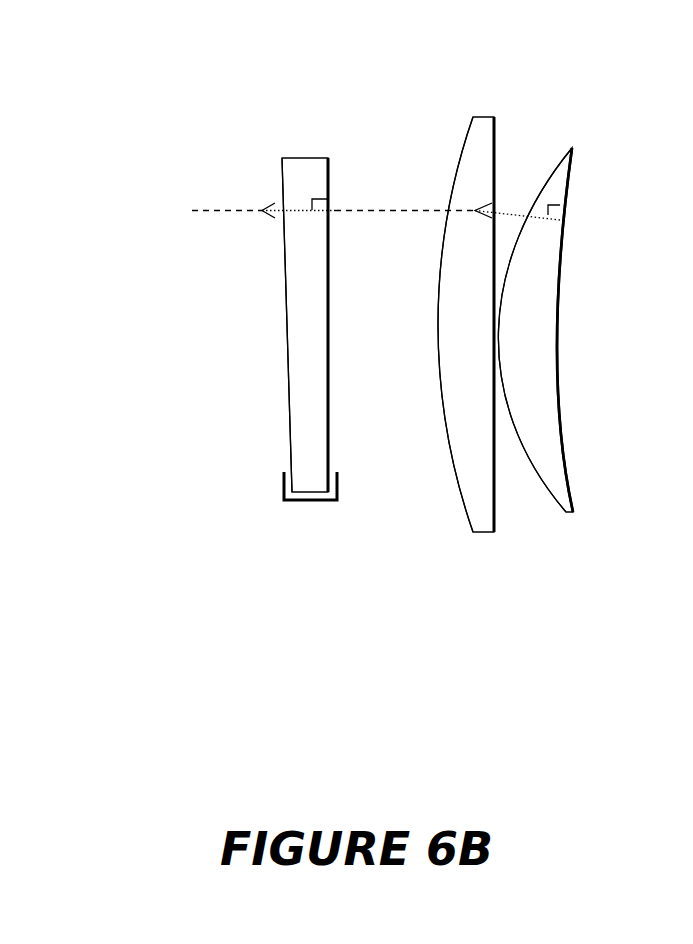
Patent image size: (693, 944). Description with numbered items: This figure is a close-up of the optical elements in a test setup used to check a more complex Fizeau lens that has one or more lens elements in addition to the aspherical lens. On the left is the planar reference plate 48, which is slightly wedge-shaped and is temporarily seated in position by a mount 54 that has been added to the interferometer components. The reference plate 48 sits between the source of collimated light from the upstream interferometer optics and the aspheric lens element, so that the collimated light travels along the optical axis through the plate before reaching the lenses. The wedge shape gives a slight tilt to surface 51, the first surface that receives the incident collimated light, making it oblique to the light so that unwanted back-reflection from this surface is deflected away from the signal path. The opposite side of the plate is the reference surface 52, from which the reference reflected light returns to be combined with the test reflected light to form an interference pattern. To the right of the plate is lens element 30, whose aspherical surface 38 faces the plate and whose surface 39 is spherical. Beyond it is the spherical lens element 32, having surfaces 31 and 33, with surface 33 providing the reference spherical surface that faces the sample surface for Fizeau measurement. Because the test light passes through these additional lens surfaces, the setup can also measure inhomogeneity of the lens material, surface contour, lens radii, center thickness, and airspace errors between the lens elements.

The lens element 30 is at (483, 115).
The surface 31 is at (532, 190).
The spherical lens element 32 is at (572, 148).
The surface 33 is at (555, 375).
The aspherical surface 38 is at (460, 160).
The spherical surface 39 is at (497, 488).
The planar reference plate 48 is at (310, 157).
The surface 51 is at (290, 395).
The reference surface 52 is at (330, 423).
The mount 54 is at (280, 493).